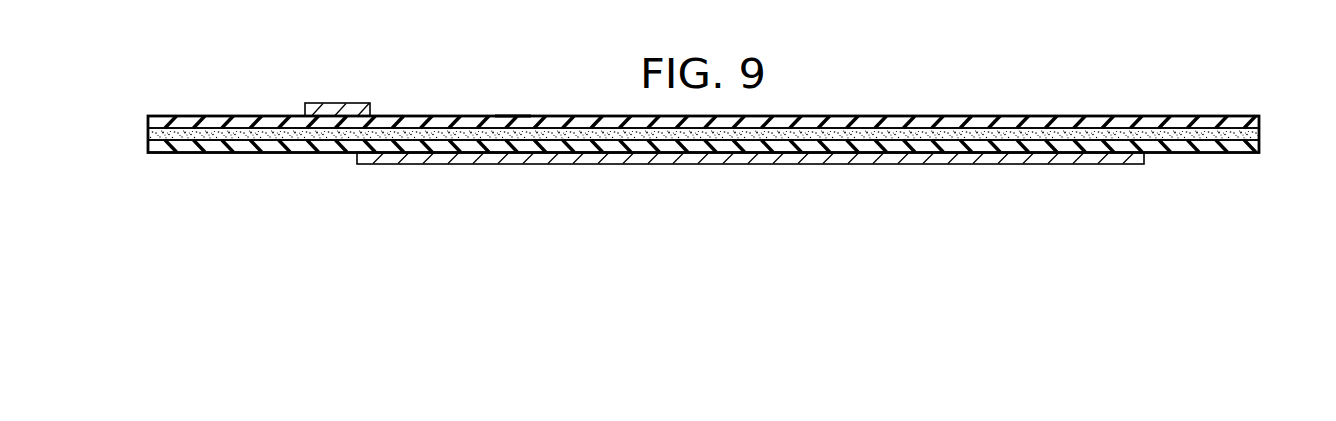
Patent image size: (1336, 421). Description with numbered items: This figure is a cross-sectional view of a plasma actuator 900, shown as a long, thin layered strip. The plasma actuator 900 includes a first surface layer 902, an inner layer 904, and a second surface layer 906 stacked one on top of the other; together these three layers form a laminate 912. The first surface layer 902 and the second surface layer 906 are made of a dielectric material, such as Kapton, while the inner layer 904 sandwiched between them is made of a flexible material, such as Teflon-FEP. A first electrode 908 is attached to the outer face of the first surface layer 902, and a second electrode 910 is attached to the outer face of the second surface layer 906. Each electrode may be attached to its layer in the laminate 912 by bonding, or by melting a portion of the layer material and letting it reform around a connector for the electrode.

The plasma actuator 900 is at (998, 80).
The first surface layer 902 is at (223, 120).
The inner layer 904 is at (148, 132).
The second surface layer 906 is at (224, 148).
The first electrode 908 is at (328, 107).
The second electrode 910 is at (433, 158).
The laminate 912 is at (513, 115).